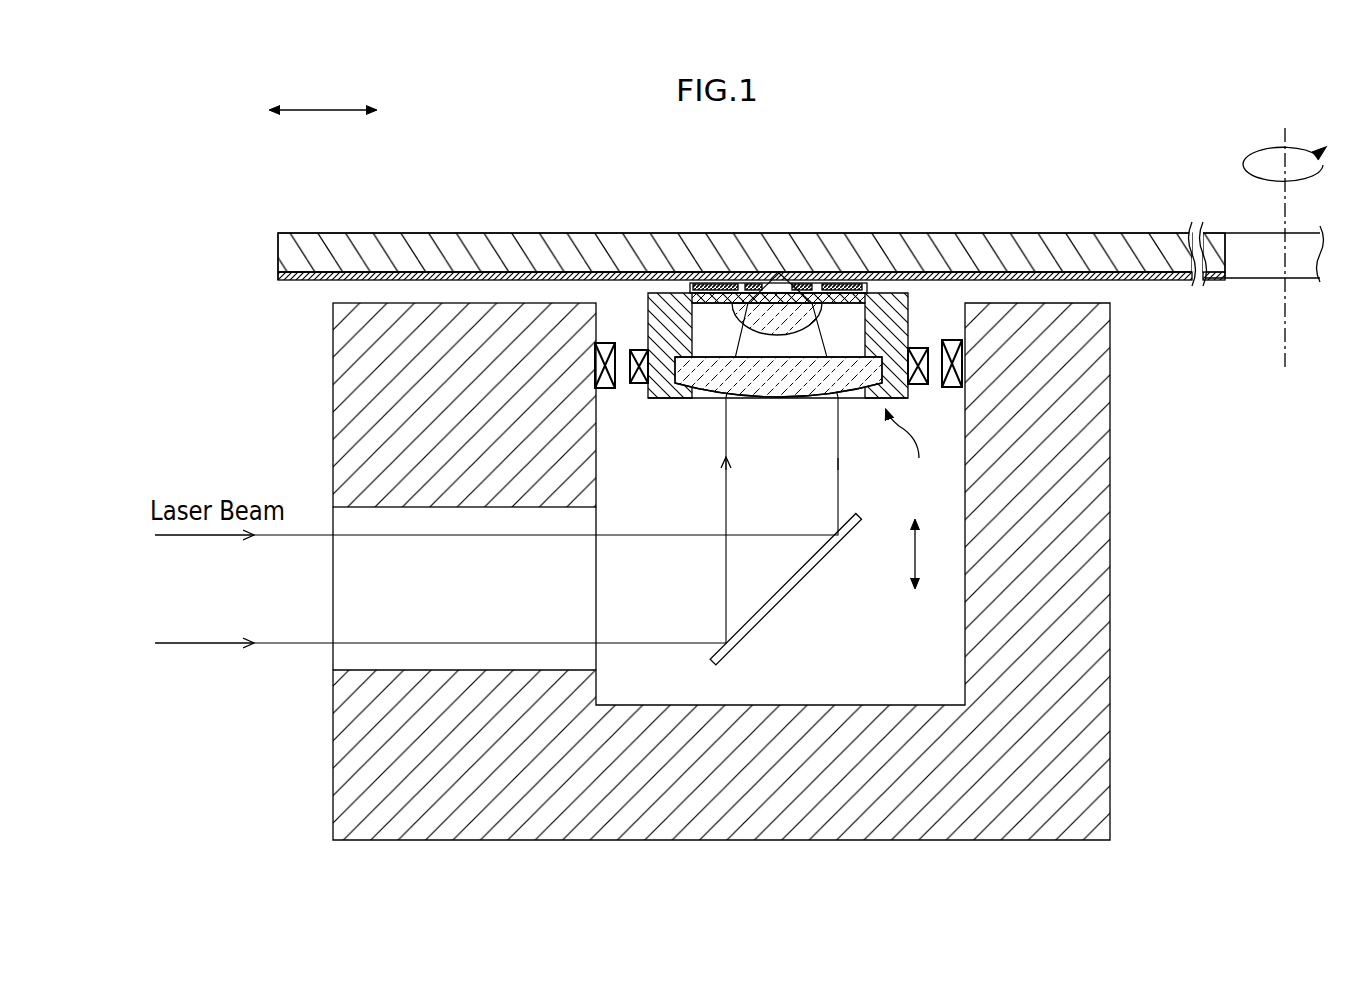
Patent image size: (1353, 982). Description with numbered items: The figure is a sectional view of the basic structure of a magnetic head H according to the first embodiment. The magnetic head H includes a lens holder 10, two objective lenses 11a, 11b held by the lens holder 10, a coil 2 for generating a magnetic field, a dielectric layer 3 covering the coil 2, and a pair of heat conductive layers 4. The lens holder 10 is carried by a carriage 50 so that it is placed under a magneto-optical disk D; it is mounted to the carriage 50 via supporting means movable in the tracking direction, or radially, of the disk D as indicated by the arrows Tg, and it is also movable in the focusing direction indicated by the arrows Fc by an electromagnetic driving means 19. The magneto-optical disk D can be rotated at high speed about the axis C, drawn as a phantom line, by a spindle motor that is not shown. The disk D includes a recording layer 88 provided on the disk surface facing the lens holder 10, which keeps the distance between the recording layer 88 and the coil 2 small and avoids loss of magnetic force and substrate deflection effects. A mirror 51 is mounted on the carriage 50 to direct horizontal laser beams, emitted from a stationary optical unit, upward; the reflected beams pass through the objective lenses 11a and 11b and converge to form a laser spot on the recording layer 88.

The magneto-optical disk D is at (518, 233).
The recording layer 88 is at (574, 280).
The axis C is at (1285, 138).
The carriage 50 is at (350, 387).
The mirror 51 is at (821, 554).
The lens holder 10 is at (660, 326).
The objective lens 11a is at (713, 392).
The objective lens 11b is at (757, 328).
The heat conductive layers 4 is at (712, 285).
The dielectric layer 3 is at (738, 285).
The coil 2 is at (806, 285).
The electromagnetic driving means 19 is at (640, 386).
The magnetic head H is at (908, 450).
The focusing direction Fc is at (934, 554).
The tracking direction Tg is at (323, 93).